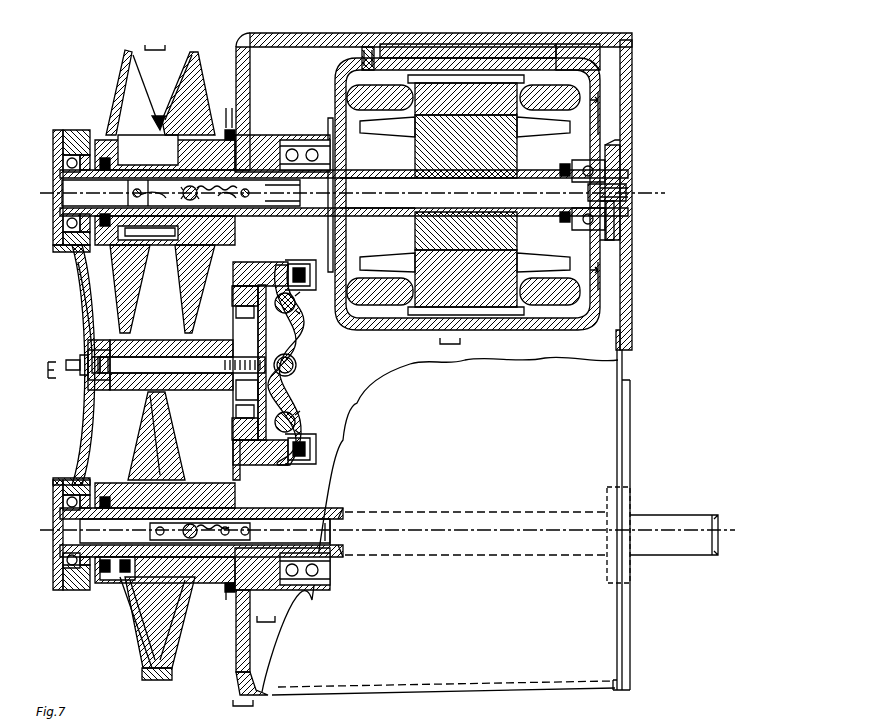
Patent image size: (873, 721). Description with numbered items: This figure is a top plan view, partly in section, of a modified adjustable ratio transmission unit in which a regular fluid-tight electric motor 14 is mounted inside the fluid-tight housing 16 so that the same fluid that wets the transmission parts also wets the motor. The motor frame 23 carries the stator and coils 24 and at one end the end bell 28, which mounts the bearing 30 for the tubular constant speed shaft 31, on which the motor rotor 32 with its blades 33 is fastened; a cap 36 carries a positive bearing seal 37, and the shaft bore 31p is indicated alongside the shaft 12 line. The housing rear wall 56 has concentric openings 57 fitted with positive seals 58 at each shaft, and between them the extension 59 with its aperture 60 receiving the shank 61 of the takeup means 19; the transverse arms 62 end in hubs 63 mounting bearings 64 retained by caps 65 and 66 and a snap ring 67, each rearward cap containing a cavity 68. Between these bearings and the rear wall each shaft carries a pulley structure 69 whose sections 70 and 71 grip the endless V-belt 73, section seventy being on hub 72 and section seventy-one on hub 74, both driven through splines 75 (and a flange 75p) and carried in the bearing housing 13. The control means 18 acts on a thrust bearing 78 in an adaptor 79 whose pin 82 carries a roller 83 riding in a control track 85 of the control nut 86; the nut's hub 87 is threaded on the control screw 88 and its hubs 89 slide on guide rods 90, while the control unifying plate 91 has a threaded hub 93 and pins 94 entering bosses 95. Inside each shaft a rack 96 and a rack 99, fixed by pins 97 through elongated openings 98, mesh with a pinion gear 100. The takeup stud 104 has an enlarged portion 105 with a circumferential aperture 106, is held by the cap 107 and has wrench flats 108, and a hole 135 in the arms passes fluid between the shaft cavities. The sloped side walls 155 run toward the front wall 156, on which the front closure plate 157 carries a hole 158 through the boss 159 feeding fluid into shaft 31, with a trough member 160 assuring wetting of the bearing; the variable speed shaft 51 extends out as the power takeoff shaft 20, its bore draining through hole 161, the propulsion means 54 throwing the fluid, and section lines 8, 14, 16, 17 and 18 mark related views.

The section line 8 is at (599, 191).
The hollow shaft 12 is at (290, 188).
The bearing housing 13 is at (252, 148).
The driving electric motor 14 is at (450, 349).
The fluid inclosure housing 16 is at (242, 710).
The adjustable speed mechanism 17 is at (155, 40).
The control means 18 is at (266, 626).
The takeup means 19 is at (43, 372).
The power takeoff shaft 20 is at (676, 505).
The frame 23 is at (463, 64).
The stator and coils 24 is at (397, 92).
The end bell 28 is at (594, 88).
The bearing 30 is at (608, 168).
The constant speed shaft 31 is at (402, 172).
The rotor shaft bore 31p is at (380, 192).
The motor rotor 32 is at (512, 147).
The blades 33 is at (396, 138).
The cap 36 is at (560, 224).
The positive bearing seal 37 is at (560, 167).
The variable speed shaft 51 is at (110, 552).
The propulsion means 54 is at (324, 115).
The rear wall 56 is at (238, 86).
The concentric openings 57 is at (228, 108).
The positive seals 58 is at (226, 131).
The extension 59 is at (120, 402).
The aperture 60 is at (178, 392).
The shank 61 is at (181, 366).
The transverse arms 62 is at (78, 292).
The hub 63 is at (72, 138).
The bearing 64 is at (64, 160).
The cap 65 is at (88, 135).
The cap 66 is at (60, 130).
The snap ring 67 is at (62, 167).
The cavity 68 is at (62, 223).
The adjustable effective diameter pulley structure 69 is at (104, 66).
The pulley section 70 is at (130, 64).
The pulley section 71 is at (196, 58).
The hub 72 is at (128, 494).
The endless V-belt 73 is at (148, 678).
The hub 74 is at (210, 470).
The splines 75 is at (330, 506).
The hub flange 75p is at (163, 228).
The thrust bearing 78 is at (296, 134).
The adaptor 79 is at (286, 136).
The pin 82 is at (312, 280).
The roller 83 is at (288, 274).
The control track 85 is at (244, 272).
The control nut 86 is at (296, 388).
The hub 87 is at (296, 356).
The control screw 88 is at (295, 365).
The hubs 89 is at (296, 303).
The guide rod 90 is at (297, 320).
The control unifying plate 91 is at (258, 390).
The hub 93 is at (252, 345).
The pins 94 is at (232, 294).
The bosses 95 is at (236, 308).
The rack 96 is at (235, 196).
The pin 97 is at (260, 195).
The elongated opening 98 is at (130, 188).
The rack 99 is at (128, 200).
The pinion gear 100 is at (183, 186).
The takeup stud 104 is at (86, 350).
The enlarged diameter portion 105 is at (88, 374).
The circumferential aperture 106 is at (94, 380).
The cap 107 is at (82, 350).
The flat portions 108 is at (80, 358).
The hole 135 is at (72, 264).
The side walls 155 is at (448, 36).
The front wall 156 is at (622, 360).
The front closure plate 157 is at (631, 268).
The hole 158 is at (626, 190).
The boss 159 is at (616, 210).
The trough member 160 is at (618, 152).
The hole 161 is at (326, 560).